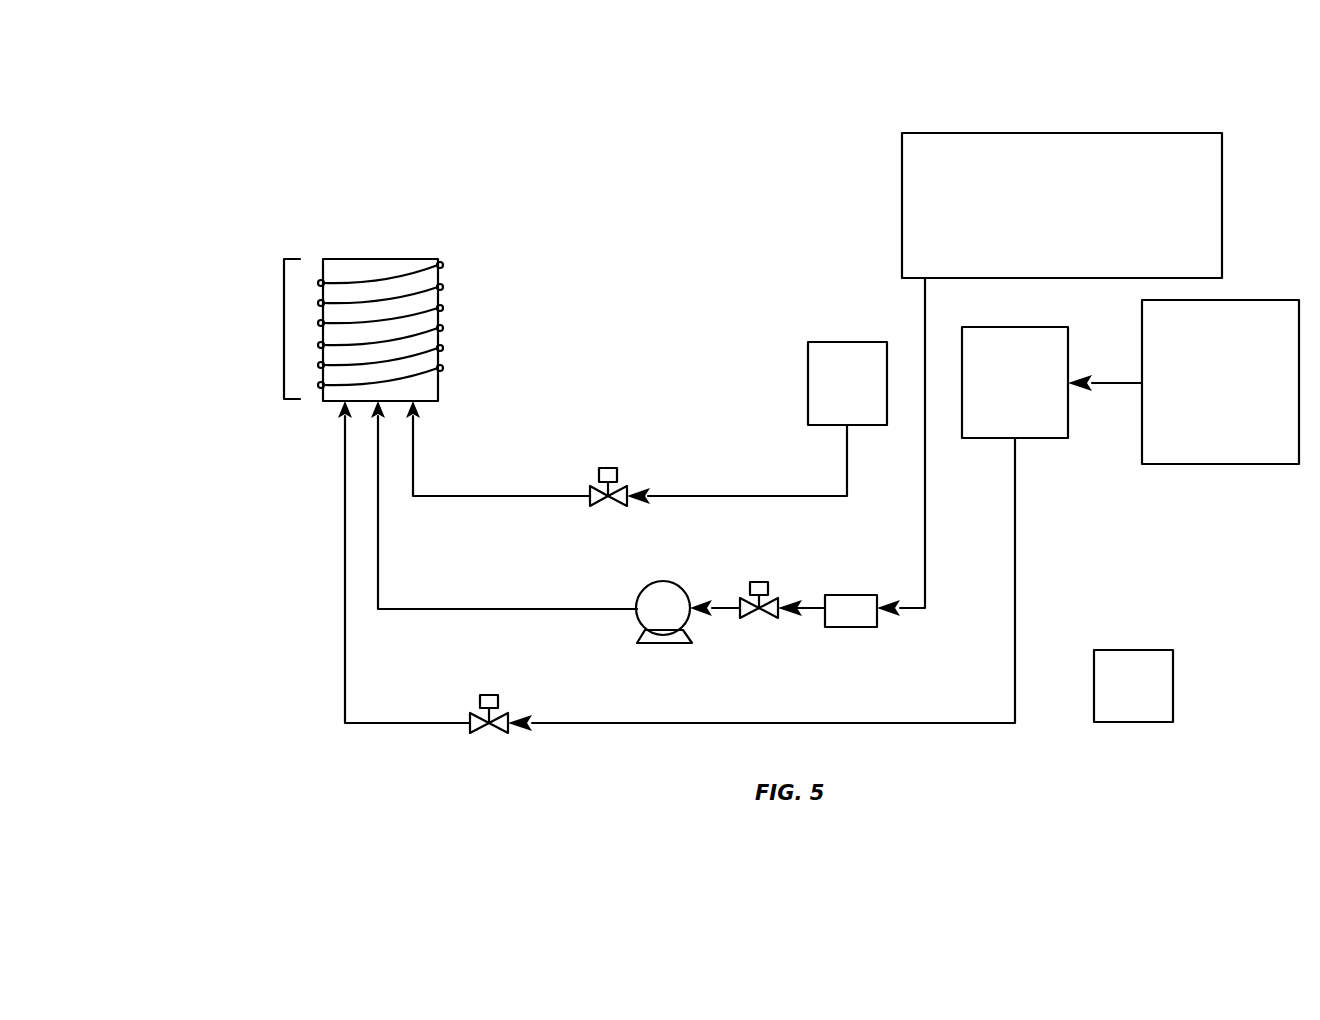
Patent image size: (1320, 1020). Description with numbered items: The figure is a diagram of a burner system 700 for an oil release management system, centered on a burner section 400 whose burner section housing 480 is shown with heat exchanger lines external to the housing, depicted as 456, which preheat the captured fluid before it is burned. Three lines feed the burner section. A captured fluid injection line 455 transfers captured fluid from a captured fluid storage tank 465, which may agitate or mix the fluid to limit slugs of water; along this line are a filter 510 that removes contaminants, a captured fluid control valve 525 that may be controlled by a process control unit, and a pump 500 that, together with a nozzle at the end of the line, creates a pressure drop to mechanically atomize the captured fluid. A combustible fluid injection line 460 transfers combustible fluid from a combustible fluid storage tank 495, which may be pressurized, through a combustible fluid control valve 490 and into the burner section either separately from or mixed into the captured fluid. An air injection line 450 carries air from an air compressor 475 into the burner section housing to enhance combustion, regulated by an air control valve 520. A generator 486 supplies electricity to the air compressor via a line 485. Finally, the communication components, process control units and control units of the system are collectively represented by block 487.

The burner system 700 is at (279, 112).
The burner section 400 is at (427, 309).
The burner section housing 480 is at (352, 270).
The captured fluid injection line 455 is at (441, 309).
The heat exchanger lines external to the burner section housing 456 is at (284, 327).
The combustible fluid injection line 460 is at (484, 494).
The combustible fluid control valve 490 is at (602, 468).
The air injection line 450 is at (398, 720).
The air control valve 520 is at (485, 693).
The pump 500 is at (653, 598).
The captured fluid control valve 525 is at (757, 582).
The filter 510 is at (842, 602).
The captured fluid storage tank 465 is at (913, 170).
The combustible fluid storage tank 495 is at (822, 368).
The air compressor 475 is at (983, 423).
The line 485 is at (1107, 387).
The generator 486 is at (1177, 452).
The communication components, process control units and control units 487 is at (1115, 661).